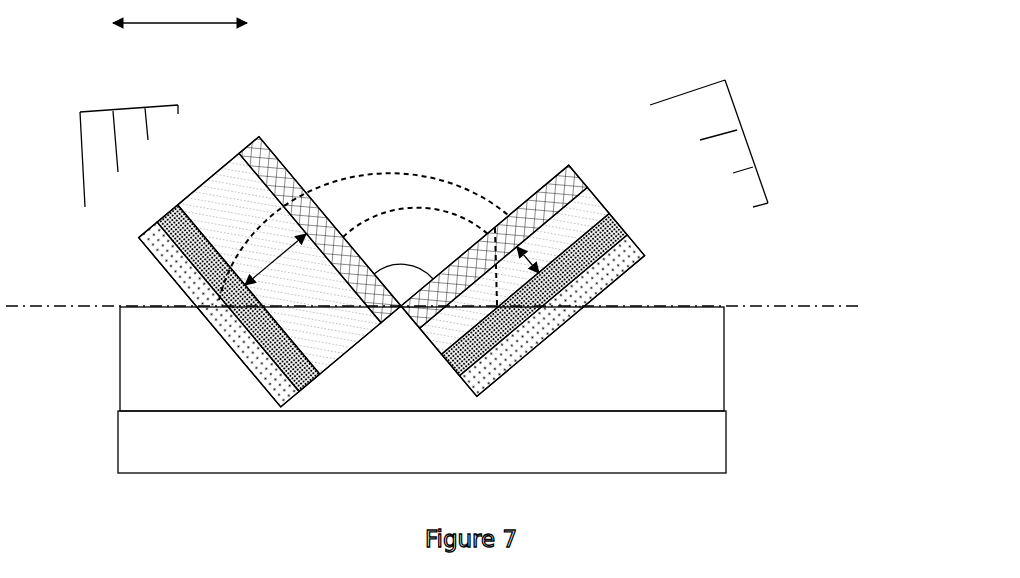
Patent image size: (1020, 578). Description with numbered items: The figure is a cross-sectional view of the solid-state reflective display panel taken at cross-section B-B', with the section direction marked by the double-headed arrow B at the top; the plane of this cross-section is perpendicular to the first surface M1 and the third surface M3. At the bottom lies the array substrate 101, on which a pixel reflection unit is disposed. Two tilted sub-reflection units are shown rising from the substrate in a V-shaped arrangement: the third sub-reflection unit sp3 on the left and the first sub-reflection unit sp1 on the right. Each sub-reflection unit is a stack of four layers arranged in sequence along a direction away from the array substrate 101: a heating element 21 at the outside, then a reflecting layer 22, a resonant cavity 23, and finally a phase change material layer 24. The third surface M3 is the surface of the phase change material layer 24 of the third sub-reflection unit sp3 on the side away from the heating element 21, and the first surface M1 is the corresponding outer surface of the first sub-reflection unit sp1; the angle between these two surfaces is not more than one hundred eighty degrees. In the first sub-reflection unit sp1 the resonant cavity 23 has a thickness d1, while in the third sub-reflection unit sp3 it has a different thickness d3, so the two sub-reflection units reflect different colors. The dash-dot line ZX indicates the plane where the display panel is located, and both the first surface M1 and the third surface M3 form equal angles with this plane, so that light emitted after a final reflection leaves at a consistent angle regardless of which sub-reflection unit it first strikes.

The heating element 21 is at (163, 258).
The reflecting layer 22 is at (188, 252).
The resonant cavity 23 is at (237, 212).
The phase change material layer 24 is at (243, 153).
The array substrate 101 is at (240, 446).
The first surface M1 is at (521, 203).
The third surface M3 is at (283, 172).
The first sub-reflection unit sp1 is at (752, 143).
The third sub-reflection unit sp3 is at (128, 108).
The line ZX is at (800, 306).
The thickness d1 is at (536, 258).
The thickness d3 is at (276, 260).
The cross-section B-B' B is at (183, 23).